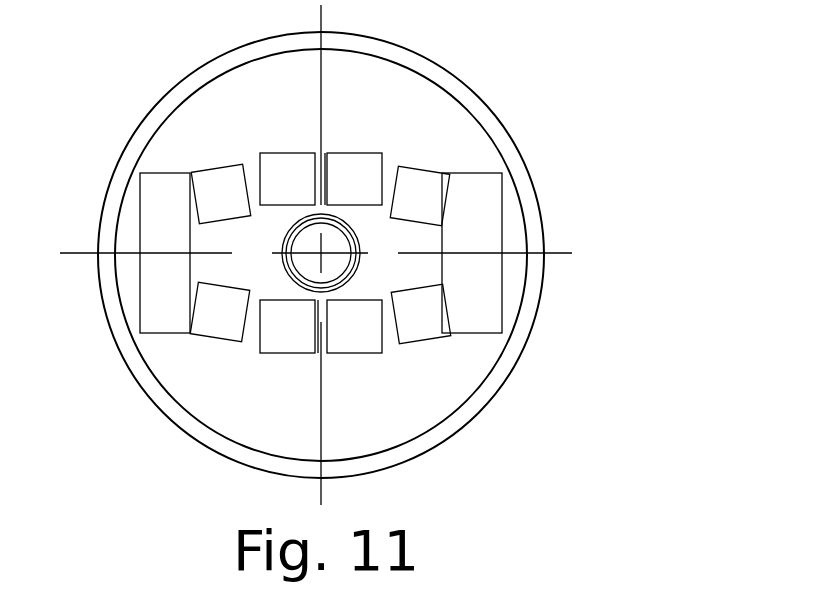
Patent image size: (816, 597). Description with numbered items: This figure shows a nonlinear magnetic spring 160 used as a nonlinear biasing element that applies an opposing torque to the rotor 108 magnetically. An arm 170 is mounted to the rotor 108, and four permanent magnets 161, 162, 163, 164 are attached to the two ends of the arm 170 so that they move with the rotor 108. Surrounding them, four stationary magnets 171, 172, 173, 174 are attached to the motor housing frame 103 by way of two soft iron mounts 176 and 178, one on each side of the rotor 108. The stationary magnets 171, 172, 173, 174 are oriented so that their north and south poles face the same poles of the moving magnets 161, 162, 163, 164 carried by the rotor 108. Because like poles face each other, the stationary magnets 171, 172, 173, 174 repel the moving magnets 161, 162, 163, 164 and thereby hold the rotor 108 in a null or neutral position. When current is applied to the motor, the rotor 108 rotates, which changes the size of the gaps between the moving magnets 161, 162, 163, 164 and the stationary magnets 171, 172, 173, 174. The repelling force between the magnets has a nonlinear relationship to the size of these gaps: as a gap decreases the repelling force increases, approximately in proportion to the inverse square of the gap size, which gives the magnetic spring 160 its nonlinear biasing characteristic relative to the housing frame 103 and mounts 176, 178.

The motor housing frame 103 is at (428, 60).
The rotor 108 is at (287, 270).
The nonlinear magnetic spring 160 is at (597, 50).
The permanent magnet 161 is at (350, 153).
The permanent magnet 162 is at (298, 152).
The permanent magnet 163 is at (347, 353).
The permanent magnet 164 is at (300, 353).
The arm 170 is at (324, 153).
The stationary magnet 171 is at (428, 165).
The stationary magnet 172 is at (200, 167).
The stationary magnet 173 is at (427, 342).
The stationary magnet 174 is at (213, 340).
The soft iron mount 176 is at (502, 217).
The soft iron mount 178 is at (138, 210).